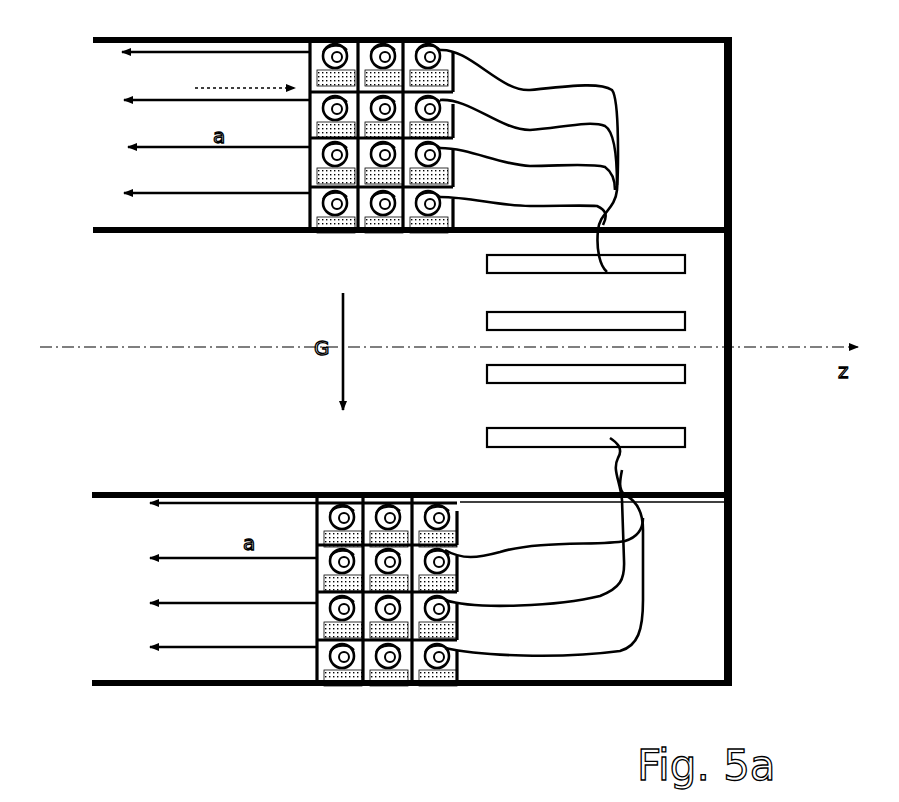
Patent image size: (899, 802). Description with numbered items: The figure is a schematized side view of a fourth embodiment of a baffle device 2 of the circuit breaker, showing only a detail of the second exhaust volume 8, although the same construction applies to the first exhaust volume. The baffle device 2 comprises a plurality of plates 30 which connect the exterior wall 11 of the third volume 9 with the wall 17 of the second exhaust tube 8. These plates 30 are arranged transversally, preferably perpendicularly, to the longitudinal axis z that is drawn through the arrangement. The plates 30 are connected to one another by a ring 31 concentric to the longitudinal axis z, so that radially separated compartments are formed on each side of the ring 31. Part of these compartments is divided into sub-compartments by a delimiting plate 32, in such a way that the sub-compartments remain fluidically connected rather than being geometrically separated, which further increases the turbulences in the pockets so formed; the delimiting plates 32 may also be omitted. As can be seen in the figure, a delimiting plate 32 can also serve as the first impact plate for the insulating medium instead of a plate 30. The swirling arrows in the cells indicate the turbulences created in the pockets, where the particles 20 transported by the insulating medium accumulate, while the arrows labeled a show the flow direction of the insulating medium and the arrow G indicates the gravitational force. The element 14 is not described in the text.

The baffle device 2 is at (245, 78).
The second exhaust volume 8 is at (713, 308).
The third volume 9 is at (381, 631).
The exterior wall 11 is at (185, 686).
The heat exchanger plates 14 is at (687, 385).
The wall 17 is at (695, 226).
The particles 20 is at (330, 688).
The plates 30 is at (435, 688).
The ring 31 is at (398, 688).
The delimiting plate 32 is at (372, 688).